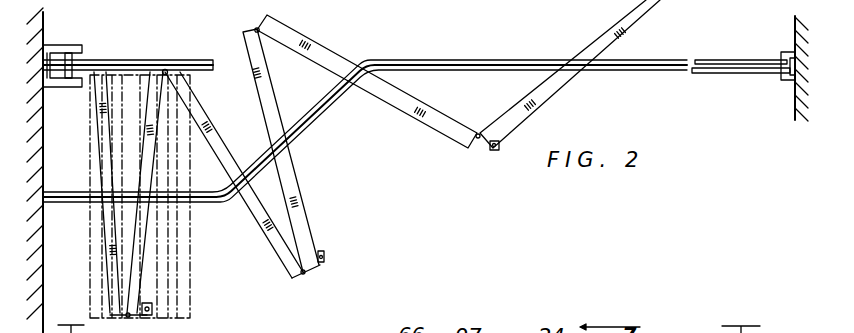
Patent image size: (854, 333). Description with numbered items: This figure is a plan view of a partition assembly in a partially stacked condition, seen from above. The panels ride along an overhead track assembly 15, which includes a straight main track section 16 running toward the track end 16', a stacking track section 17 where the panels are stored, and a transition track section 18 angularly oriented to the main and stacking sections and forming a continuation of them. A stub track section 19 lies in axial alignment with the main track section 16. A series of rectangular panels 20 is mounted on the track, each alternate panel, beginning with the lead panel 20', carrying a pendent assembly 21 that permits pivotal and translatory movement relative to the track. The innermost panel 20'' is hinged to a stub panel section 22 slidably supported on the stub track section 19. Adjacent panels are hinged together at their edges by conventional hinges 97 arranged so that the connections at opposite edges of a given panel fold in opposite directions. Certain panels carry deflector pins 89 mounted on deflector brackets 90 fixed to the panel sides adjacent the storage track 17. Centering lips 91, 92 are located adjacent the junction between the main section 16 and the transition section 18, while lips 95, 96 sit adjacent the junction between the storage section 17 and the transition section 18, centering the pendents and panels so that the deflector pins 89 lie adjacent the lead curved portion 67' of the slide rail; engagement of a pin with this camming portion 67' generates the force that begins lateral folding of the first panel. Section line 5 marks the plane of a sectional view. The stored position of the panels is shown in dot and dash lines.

The track assembly 15 is at (613, 80).
The main track section 16 is at (583, 45).
The end of the track 16' is at (743, 44).
The stacking track section 17 is at (67, 204).
The transition track section 18 is at (343, 100).
The stub track section 19 is at (140, 60).
The panel 20 is at (367, 81).
The lead panel 20' is at (506, 161).
The innermost panel 20'' is at (99, 193).
The pendent assembly 21 is at (589, 51).
The stub panel section 22 is at (72, 68).
The section line 5- 5 is at (268, 155).
The lead curved portion of the slide rail 67' is at (397, 122).
The deflector pin 89 is at (326, 254).
The deflector bracket 90 is at (325, 263).
The centering lip 91 is at (397, 58).
The centering lip 92 is at (398, 70).
The centering lip 95 is at (192, 191).
The centering lip 96 is at (197, 205).
The hinge 97 is at (478, 134).